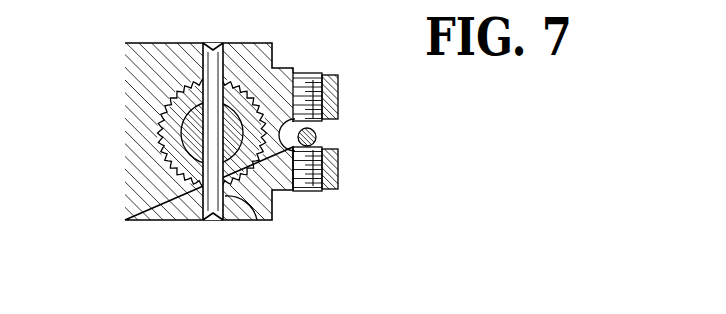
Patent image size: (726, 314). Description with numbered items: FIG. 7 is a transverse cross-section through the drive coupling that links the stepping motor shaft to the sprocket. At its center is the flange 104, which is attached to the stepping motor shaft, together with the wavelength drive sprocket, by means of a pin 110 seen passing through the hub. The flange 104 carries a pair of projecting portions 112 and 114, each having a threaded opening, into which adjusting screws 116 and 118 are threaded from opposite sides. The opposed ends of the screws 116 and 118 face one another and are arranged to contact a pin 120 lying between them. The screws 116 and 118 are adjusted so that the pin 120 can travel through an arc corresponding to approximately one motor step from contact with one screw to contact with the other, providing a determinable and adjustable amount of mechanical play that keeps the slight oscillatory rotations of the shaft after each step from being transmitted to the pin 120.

The flange 104 is at (137, 173).
The pin 110 is at (258, 220).
The projecting portion 112 is at (338, 94).
The projecting portion 114 is at (338, 180).
The adjusting screw 116 is at (316, 183).
The adjusting screw 118 is at (313, 73).
The pin 120 is at (316, 135).